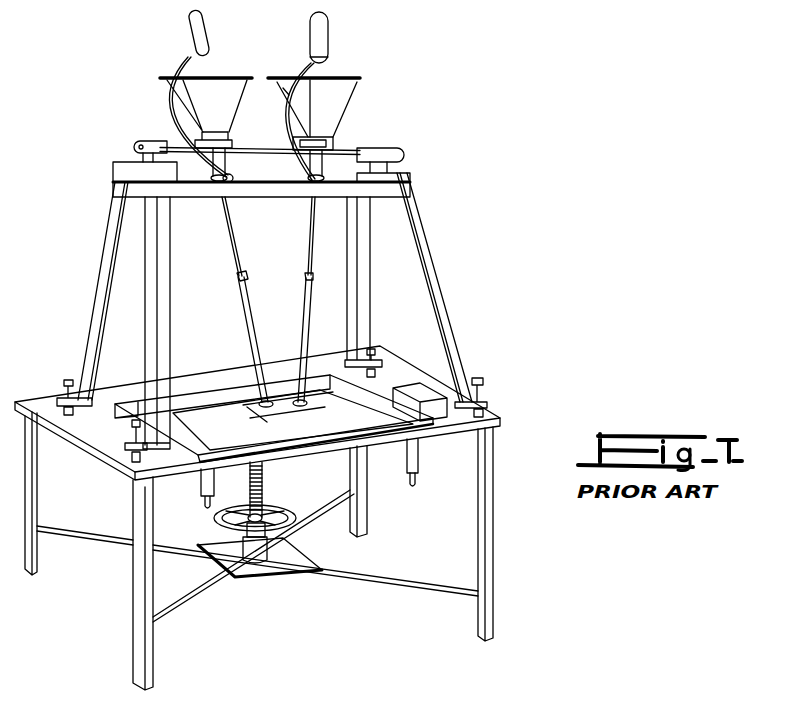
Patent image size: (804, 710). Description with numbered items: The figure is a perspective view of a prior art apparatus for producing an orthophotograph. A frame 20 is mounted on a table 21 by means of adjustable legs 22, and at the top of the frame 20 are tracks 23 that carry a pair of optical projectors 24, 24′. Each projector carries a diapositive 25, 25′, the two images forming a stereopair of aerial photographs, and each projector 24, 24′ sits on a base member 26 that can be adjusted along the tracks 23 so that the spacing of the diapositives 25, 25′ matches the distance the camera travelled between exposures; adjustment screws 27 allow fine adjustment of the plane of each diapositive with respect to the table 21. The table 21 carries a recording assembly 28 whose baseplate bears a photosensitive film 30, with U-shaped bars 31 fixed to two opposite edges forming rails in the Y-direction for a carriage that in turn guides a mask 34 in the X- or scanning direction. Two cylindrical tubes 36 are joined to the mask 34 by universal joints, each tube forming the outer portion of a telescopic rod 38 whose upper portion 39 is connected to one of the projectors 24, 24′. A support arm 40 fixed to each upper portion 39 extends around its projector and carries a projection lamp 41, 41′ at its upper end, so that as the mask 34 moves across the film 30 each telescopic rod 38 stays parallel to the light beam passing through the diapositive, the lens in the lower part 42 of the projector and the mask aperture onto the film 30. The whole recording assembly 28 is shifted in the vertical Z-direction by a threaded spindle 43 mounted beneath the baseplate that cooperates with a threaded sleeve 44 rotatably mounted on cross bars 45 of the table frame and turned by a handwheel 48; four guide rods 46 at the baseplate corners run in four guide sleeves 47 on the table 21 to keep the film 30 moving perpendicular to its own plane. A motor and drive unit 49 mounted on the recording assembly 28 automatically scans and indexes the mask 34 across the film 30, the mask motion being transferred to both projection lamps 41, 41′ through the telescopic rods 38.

The frame 20 is at (438, 290).
The table 21 is at (510, 414).
The adjustable legs 22 is at (484, 378).
The tracks 23 is at (395, 152).
The optical projector 24 is at (188, 97).
The optical projector 24′ is at (330, 108).
The diapositive 25 is at (211, 76).
The diapositive 25′ is at (338, 78).
The base member 26 is at (198, 142).
The adjustment screws 27 is at (285, 91).
The recording assembly 28 is at (196, 386).
The photosensitive layer or film 30 is at (215, 398).
The bars 31 is at (380, 372).
The mask 34 is at (270, 400).
The cylindrical tubes 36 is at (311, 324).
The telescopic rod 38 is at (256, 296).
The upper portion of telescopic rod 39 is at (307, 221).
The support arm 40 is at (183, 57).
The projection lamp 41 is at (206, 40).
The projection lamp 41′ is at (327, 36).
The lower part of the projector 42 is at (303, 143).
The threaded spindle 43 is at (265, 487).
The threaded sleeve 44 is at (258, 553).
The cross bars 45 is at (74, 540).
The guide rods 46 is at (205, 508).
The guide sleeves 47 is at (419, 456).
The handwheel 48 is at (297, 520).
The motor and drive unit 49 is at (427, 385).